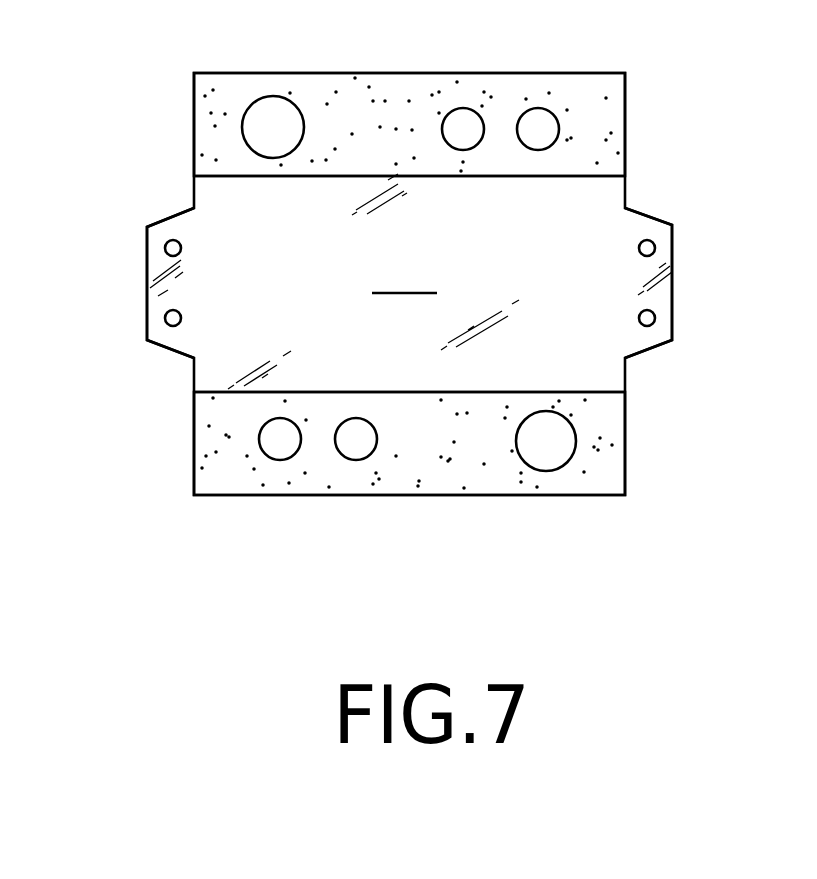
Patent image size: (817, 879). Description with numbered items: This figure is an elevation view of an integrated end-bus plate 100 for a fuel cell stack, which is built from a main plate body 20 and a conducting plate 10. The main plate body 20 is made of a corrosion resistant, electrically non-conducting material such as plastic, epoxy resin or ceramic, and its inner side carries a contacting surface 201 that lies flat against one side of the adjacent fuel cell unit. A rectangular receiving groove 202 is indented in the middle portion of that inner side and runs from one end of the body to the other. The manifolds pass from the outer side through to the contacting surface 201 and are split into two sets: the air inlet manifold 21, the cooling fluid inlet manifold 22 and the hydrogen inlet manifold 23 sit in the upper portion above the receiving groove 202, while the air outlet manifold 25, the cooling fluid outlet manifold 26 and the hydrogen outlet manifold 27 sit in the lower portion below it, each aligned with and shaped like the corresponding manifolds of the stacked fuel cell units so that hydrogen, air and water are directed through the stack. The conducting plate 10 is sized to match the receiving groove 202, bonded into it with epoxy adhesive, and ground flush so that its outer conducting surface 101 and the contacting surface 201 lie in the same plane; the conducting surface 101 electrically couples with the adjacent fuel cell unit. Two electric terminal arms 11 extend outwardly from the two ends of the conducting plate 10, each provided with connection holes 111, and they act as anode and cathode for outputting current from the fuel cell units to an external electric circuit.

The integrated end-bus plate 100 is at (663, 475).
The conducting plate 10 is at (590, 205).
The conducting surface 101 is at (407, 275).
The electric terminal arm 11 is at (176, 338).
The connection hole 111 is at (165, 250).
The main plate body 20 is at (596, 148).
The contacting surface 201 is at (220, 107).
The receiving groove 202 is at (230, 393).
The air inlet manifold 21 is at (277, 97).
The cooling fluid inlet manifold 22 is at (467, 108).
The hydrogen inlet manifold 23 is at (561, 108).
The air outlet manifold 25 is at (545, 472).
The cooling fluid outlet manifold 26 is at (360, 460).
The hydrogen outlet manifold 27 is at (280, 460).